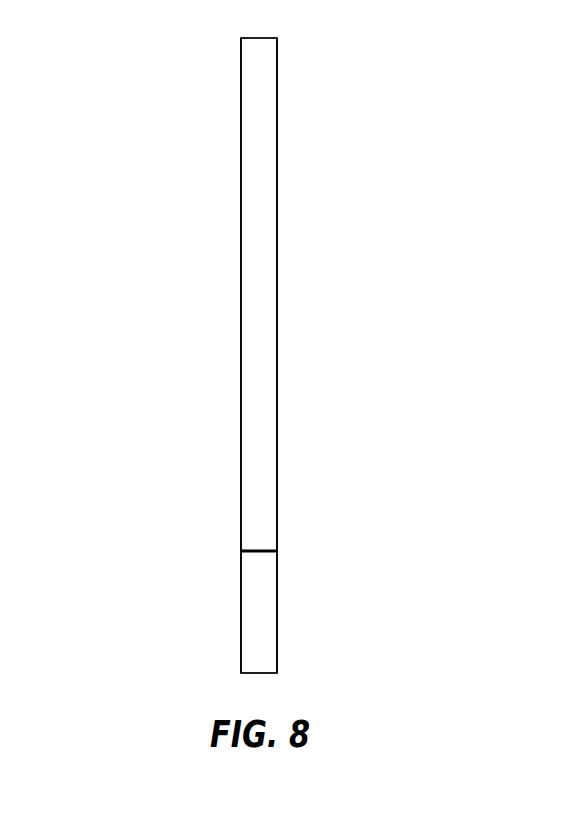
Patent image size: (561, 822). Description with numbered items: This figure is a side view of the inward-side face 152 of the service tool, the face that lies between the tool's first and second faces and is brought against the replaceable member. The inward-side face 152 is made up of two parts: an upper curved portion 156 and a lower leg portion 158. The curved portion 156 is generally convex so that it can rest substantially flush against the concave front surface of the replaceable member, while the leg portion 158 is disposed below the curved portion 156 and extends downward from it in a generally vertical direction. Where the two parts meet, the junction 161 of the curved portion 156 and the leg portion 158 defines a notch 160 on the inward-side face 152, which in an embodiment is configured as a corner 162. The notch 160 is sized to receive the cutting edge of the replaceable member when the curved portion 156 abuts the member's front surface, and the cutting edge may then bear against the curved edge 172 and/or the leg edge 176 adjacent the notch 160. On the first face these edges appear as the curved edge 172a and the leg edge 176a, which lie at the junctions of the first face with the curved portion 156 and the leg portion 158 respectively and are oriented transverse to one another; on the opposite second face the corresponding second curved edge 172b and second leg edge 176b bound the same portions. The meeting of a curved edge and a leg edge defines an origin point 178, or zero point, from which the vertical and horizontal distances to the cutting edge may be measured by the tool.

The inward-side face 152 is at (268, 219).
The curved portion 156 is at (263, 138).
The leg portion 158 is at (262, 615).
The notch 160 is at (220, 533).
The junction 161 is at (220, 533).
The corner 162 is at (220, 533).
The curved edge 172 is at (261, 355).
The curved edge 172a is at (277, 344).
The second curved edge 172b is at (241, 345).
The leg edge 176 is at (258, 612).
The leg edge 176a is at (277, 660).
The second leg edge 176b is at (241, 662).
The origin point 178 is at (277, 550).